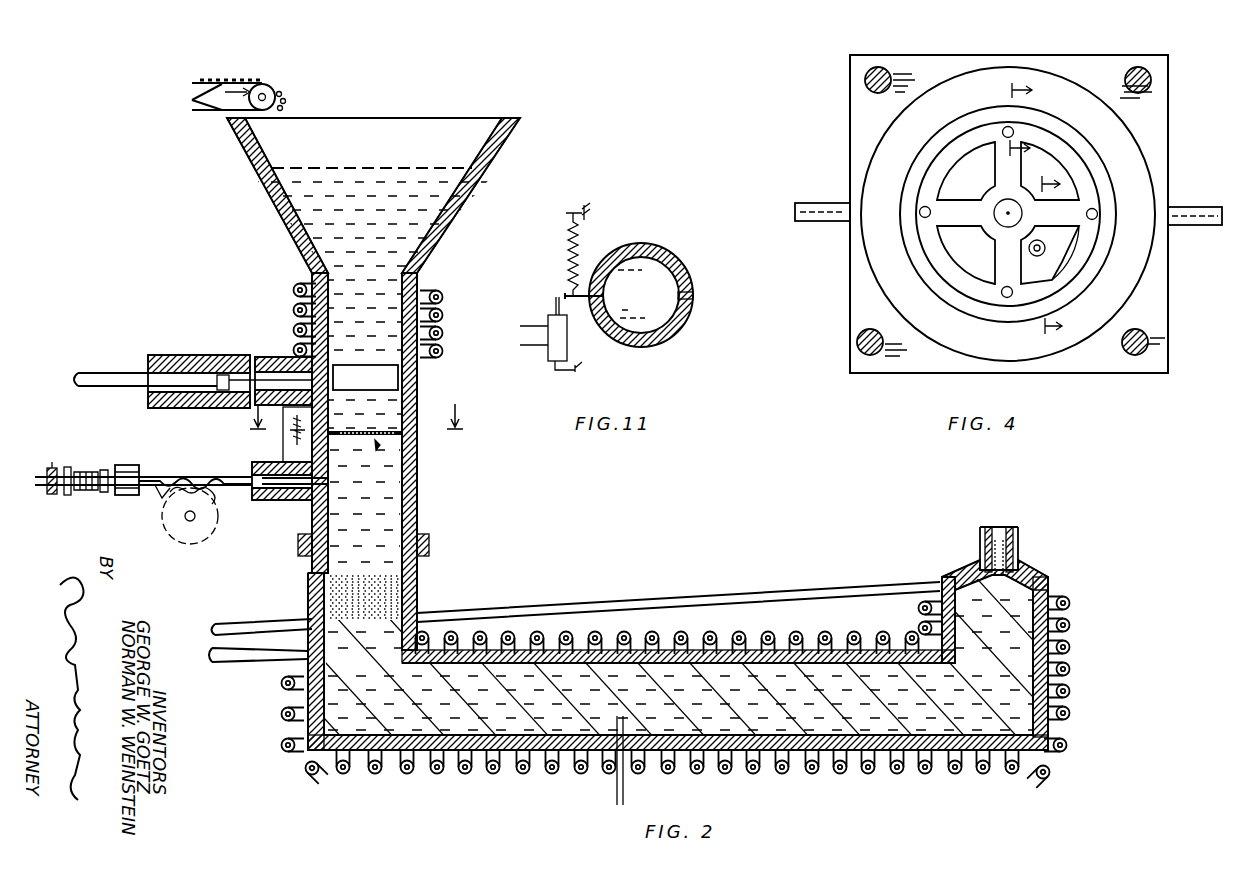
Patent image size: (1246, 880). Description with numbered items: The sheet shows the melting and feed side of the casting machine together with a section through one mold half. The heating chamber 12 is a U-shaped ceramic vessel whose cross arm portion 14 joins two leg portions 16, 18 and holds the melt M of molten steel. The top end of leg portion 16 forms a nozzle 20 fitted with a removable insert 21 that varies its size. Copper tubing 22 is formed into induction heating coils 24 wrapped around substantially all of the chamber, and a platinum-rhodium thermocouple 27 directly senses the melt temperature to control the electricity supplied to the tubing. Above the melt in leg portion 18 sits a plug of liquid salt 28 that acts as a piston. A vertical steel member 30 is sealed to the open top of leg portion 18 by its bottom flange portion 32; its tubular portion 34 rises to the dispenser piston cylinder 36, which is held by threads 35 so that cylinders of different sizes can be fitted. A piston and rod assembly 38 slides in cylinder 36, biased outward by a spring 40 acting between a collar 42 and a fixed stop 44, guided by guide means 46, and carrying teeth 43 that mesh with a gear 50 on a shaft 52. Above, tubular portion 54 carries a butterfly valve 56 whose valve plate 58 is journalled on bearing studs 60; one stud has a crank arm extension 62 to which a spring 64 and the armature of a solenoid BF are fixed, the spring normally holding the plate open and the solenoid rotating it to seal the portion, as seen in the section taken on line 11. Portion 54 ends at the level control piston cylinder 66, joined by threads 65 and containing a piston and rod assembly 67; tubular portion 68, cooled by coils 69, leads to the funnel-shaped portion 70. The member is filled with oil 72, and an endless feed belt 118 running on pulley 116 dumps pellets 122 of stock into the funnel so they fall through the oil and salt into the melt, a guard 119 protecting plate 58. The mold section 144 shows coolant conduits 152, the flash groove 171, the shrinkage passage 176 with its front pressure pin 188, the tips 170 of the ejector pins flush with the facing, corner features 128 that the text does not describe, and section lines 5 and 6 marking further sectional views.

In FIG. 2, the heating chamber 12 is at (806, 789).
In FIG. 2, the cross arm portion 14 is at (710, 775).
In FIG. 2, the leg portion 16 is at (1070, 640).
In FIG. 2, the leg portion 18 is at (308, 588).
In FIG. 2, the nozzle 20 is at (980, 537).
In FIG. 2, the insert 21 is at (992, 527).
In FIG. 2, the copper tubing 22 is at (250, 615).
In FIG. 2, the coils 24 is at (395, 776).
In FIG. 2, the platinum-rhodium thermocouple 27 is at (614, 719).
In FIG. 2, the liquid salt 28 is at (402, 582).
In FIG. 2, the member 30 is at (265, 247).
In FIG. 11, the member 30 is at (716, 294).
In FIG. 2, the bottom flange portion 32 is at (298, 544).
In FIG. 2, the tubular portion 34 is at (312, 512).
In FIG. 2, the threads 35 is at (295, 459).
In FIG. 2, the dispenser piston cylinder 36 is at (258, 462).
In FIG. 2, the piston and rod assembly 38 is at (235, 480).
In FIG. 2, the spring 40 is at (104, 470).
In FIG. 2, the collar 42 is at (68, 467).
In FIG. 2, the teeth 43 is at (150, 500).
In FIG. 2, the fixed stop 44 is at (130, 465).
In FIG. 2, the guide means 46 is at (52, 462).
In FIG. 2, the gear 50 is at (216, 504).
In FIG. 2, the shaft 52 is at (193, 520).
In FIG. 2, the tubular portion 54 is at (418, 456).
In FIG. 11, the tubular portion 54 is at (672, 262).
In FIG. 2, the butterfly valve 56 is at (378, 448).
In FIG. 11, the butterfly valve 56 is at (644, 246).
In FIG. 2, the valve plate 58 is at (352, 440).
In FIG. 11, the valve plate 58 is at (634, 294).
In FIG. 2, the bearing studs 60 is at (405, 433).
In FIG. 11, the bearing studs 60 is at (593, 292).
In FIG. 2, the crank arm extension 62 is at (308, 445).
In FIG. 11, the crank arm extension 62 is at (554, 334).
In FIG. 2, the spring 64 is at (305, 428).
In FIG. 11, the spring 64 is at (568, 260).
In FIG. 2, the threads 65 is at (290, 357).
In FIG. 2, the level control piston cylinder 66 is at (240, 355).
In FIG. 2, the piston and rod assembly 67 is at (128, 372).
In FIG. 2, the tubular portion 68 is at (438, 336).
In FIG. 2, the coils 69 is at (443, 297).
In FIG. 2, the funnel-shaped portion 70 is at (272, 188).
In FIG. 2, the fluid 72 is at (375, 298).
In FIG. 2, the pulley 116 is at (270, 92).
In FIG. 2, the endless feed belt 118 is at (195, 99).
In FIG. 2, the guard 119 is at (400, 377).
In FIG. 2, the replenishment stock 122 is at (252, 64).
In FIG. 2, the section line 11— 11 is at (357, 422).
In FIG. 2, the melt M is at (1048, 686).
In FIG. 11, the solenoid BF is at (565, 347).
In FIG. 4, the bolt holes 128 is at (865, 82).
In FIG. 4, the mold plate assembly 144 is at (838, 152).
In FIG. 4, the fluid conduits 152 is at (812, 222).
In FIG. 4, the tip 170 is at (1004, 127).
In FIG. 4, the groove 171 is at (925, 100).
In FIG. 4, the passage 176 is at (1058, 243).
In FIG. 4, the front pressure pin 188 is at (1038, 256).
In FIG. 4, the section line 5— 5 is at (1060, 256).
In FIG. 4, the section line 6— 6 is at (1035, 120).